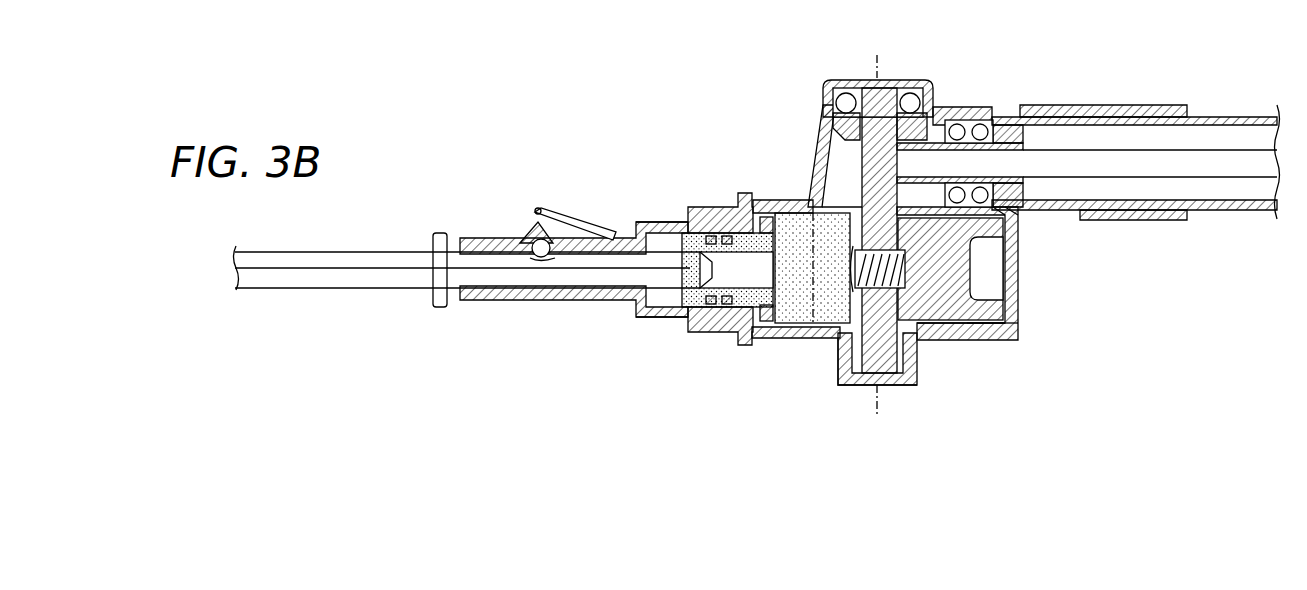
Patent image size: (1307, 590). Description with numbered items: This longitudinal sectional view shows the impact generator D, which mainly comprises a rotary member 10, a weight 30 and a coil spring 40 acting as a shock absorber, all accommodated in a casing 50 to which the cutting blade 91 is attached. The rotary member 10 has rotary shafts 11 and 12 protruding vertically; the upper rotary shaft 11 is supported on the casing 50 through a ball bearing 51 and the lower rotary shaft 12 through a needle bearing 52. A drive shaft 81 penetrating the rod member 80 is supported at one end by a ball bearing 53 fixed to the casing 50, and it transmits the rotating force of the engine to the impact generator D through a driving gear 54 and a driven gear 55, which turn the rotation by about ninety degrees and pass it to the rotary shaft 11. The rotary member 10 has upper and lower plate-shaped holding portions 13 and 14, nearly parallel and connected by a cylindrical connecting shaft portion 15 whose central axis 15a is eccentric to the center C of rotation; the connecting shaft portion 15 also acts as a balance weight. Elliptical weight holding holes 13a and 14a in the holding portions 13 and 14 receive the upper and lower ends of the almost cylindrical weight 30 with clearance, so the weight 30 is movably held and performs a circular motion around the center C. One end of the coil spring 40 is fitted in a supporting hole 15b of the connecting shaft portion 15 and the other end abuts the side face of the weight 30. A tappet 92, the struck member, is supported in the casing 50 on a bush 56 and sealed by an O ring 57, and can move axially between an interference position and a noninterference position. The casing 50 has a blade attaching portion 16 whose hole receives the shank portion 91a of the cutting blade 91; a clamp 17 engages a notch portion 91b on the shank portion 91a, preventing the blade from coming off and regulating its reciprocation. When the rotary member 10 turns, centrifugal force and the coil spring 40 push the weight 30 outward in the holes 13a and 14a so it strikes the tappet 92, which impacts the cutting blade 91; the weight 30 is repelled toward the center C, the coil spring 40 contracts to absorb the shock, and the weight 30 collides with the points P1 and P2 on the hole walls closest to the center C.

The rotary member 10 is at (1032, 272).
The upper rotary shaft 11 is at (825, 102).
The lower rotary shaft 12 is at (868, 386).
The upper plate-shaped holding portion 13 is at (1034, 237).
The weight holding hole 13a is at (840, 177).
The lower plate-shaped holding portion 14 is at (1018, 322).
The weight holding hole 14a is at (833, 345).
The connecting shaft portion 15 is at (1026, 292).
The central axis 15a is at (967, 340).
The supporting hole 15b is at (1014, 342).
The blade attaching portion 16 is at (528, 295).
The clamp 17 is at (538, 242).
The weight 30 is at (797, 220).
The coil spring 40 is at (935, 340).
The casing 50 is at (987, 340).
The bearing 51 is at (823, 100).
The bearing 52 is at (838, 358).
The ball bearing 53 is at (993, 122).
The gear 54 is at (965, 124).
The gear 55 is at (928, 98).
The bush 56 is at (718, 330).
The O ring 57 is at (730, 207).
The rod member 80 is at (1241, 114).
The drive shaft 81 is at (1210, 157).
The cutting blade 91 is at (403, 300).
The shank portion 91a is at (487, 262).
The notch portion 91b is at (581, 229).
The tappet 92 is at (662, 312).
The center of rotation C is at (873, 74).
The impact generator D is at (627, 113).
The point P1 is at (988, 251).
The point P2 is at (898, 388).